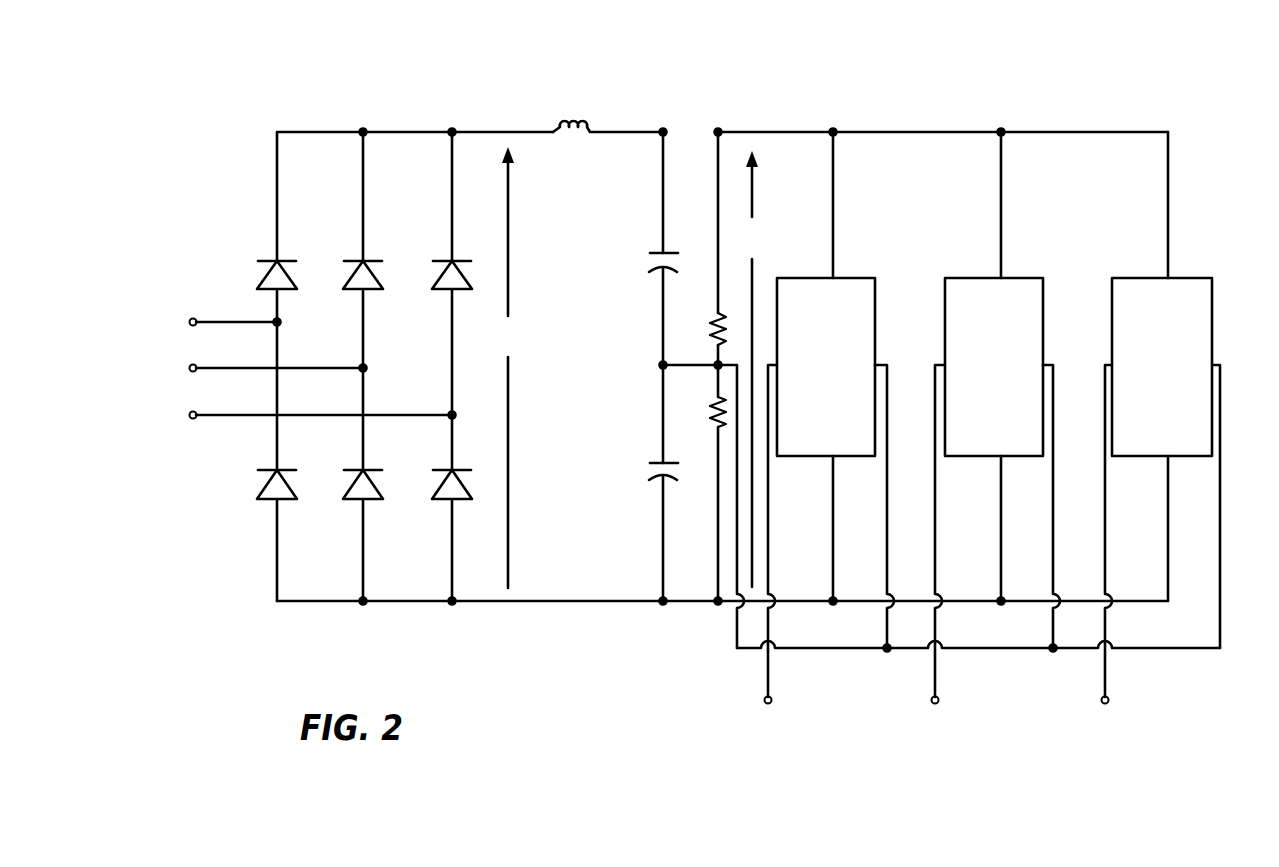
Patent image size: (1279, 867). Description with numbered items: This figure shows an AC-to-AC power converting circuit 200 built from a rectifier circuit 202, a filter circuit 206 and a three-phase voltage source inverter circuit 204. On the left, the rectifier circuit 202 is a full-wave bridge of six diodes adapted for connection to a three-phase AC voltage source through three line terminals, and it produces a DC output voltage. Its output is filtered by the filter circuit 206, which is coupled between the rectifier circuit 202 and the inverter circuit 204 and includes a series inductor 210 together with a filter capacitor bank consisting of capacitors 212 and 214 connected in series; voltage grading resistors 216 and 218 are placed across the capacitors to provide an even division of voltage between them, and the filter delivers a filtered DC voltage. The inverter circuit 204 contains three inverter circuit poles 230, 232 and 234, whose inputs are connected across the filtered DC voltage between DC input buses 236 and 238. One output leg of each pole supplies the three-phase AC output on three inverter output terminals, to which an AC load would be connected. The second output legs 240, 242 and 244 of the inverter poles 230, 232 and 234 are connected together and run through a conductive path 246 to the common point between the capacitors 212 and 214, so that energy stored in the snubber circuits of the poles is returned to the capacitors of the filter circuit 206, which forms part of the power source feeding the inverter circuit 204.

The AC-to-AC power converting circuit 200 is at (713, 395).
The rectifier circuit 202 is at (475, 107).
The three-phase voltage source inverter circuit 204 is at (1005, 397).
The filter circuit 206 is at (632, 348).
The inductor 210 is at (571, 136).
The capacitor 212 is at (650, 254).
The capacitor 214 is at (650, 464).
The voltage grading resistor 216 is at (714, 326).
The voltage grading resistor 218 is at (714, 412).
The inverter circuit pole 230 is at (848, 278).
The inverter circuit pole 232 is at (1016, 278).
The inverter circuit pole 234 is at (1183, 278).
The DC input bus 236 is at (753, 132).
The DC input bus 238 is at (797, 601).
The second output leg 240 is at (884, 365).
The second output leg 242 is at (1050, 365).
The second output leg 244 is at (1218, 365).
The conductive path 246 is at (803, 650).